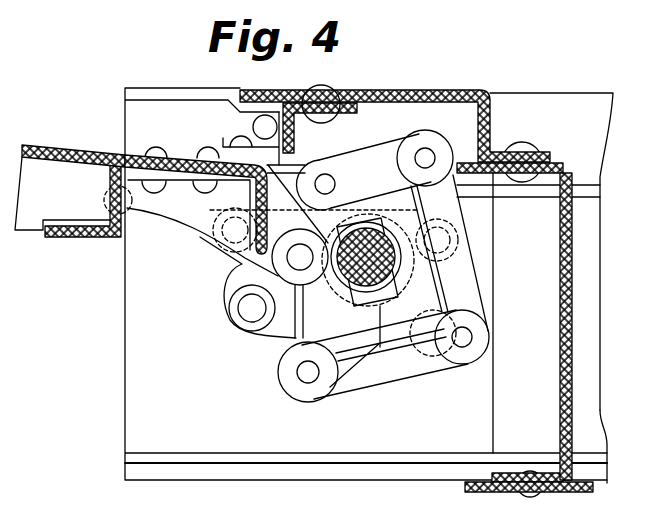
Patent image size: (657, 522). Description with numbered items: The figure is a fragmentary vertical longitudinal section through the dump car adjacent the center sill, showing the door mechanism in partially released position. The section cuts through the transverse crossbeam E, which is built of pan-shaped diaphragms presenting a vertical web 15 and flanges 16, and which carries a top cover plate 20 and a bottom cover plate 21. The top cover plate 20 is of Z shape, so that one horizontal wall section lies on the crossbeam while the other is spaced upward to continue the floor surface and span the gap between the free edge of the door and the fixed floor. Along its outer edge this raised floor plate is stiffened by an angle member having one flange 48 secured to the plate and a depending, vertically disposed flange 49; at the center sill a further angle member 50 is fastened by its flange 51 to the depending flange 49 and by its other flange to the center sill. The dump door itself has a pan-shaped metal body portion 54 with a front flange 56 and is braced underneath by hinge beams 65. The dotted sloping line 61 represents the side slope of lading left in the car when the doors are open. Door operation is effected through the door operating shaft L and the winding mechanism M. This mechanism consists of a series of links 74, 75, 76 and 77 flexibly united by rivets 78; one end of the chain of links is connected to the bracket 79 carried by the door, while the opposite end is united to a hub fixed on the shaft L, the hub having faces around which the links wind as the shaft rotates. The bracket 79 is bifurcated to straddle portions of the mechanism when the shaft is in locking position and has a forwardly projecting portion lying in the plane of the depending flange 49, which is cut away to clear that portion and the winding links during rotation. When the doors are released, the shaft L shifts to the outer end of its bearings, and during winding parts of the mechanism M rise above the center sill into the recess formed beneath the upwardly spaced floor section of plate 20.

The vertical web 15 is at (572, 313).
The flanges 16 is at (537, 170).
The top cover plate 20 is at (457, 82).
The bottom cover plate 21 is at (493, 491).
The flange 48 is at (348, 92).
The depending flange 49 is at (297, 108).
The angle member 50 is at (224, 157).
The flange 51 is at (273, 123).
The body portion 54 is at (82, 150).
The front flange 56 is at (256, 213).
The sloping line 61 is at (107, 183).
The hinge beams 65 is at (27, 214).
The link 74 is at (297, 210).
The link 75 is at (356, 166).
The link 76 is at (480, 262).
The link 77 is at (444, 363).
The rivets 78 is at (426, 158).
The bracket 79 is at (188, 182).
The door operating shaft L is at (382, 272).
The door winding mechanism M is at (425, 207).
The transverse crossbeam E is at (572, 446).